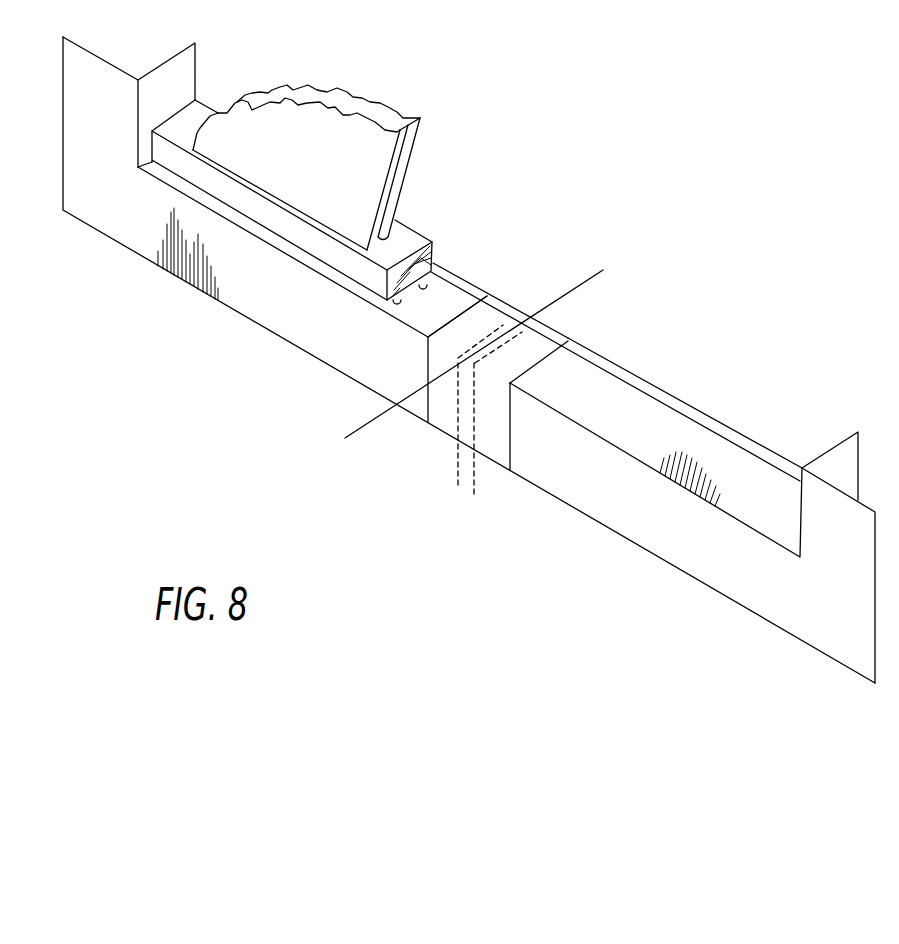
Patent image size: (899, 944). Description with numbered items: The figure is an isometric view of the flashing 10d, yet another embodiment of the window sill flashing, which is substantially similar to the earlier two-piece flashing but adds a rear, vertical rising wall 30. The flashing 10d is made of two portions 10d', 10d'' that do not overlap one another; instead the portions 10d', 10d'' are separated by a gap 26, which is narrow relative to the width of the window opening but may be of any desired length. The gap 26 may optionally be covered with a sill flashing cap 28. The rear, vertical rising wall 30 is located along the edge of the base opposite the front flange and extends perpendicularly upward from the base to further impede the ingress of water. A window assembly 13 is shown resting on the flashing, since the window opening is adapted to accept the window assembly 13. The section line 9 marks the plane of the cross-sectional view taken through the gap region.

The window assembly 13 is at (353, 82).
The flashing 10d is at (469, 360).
The flashing portion 10d' is at (498, 231).
The flashing portion 10d'' is at (692, 506).
The rear, vertical rising wall 30 is at (573, 335).
The gap 26 is at (497, 488).
The sill flashing cap 28 is at (510, 470).
The section line 9- 9 is at (253, 370).